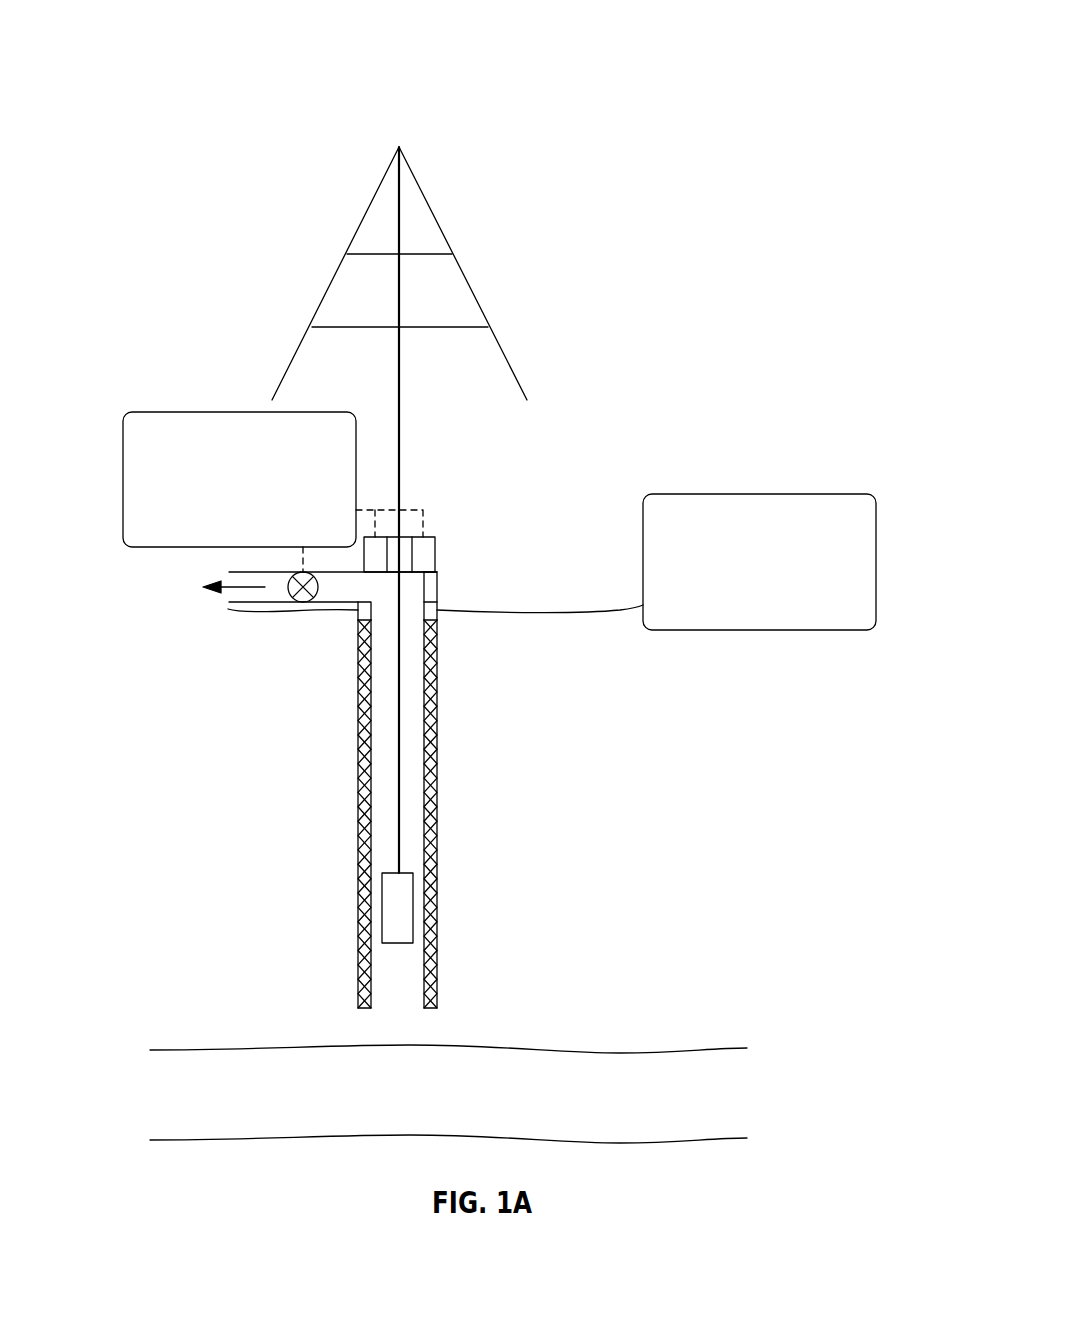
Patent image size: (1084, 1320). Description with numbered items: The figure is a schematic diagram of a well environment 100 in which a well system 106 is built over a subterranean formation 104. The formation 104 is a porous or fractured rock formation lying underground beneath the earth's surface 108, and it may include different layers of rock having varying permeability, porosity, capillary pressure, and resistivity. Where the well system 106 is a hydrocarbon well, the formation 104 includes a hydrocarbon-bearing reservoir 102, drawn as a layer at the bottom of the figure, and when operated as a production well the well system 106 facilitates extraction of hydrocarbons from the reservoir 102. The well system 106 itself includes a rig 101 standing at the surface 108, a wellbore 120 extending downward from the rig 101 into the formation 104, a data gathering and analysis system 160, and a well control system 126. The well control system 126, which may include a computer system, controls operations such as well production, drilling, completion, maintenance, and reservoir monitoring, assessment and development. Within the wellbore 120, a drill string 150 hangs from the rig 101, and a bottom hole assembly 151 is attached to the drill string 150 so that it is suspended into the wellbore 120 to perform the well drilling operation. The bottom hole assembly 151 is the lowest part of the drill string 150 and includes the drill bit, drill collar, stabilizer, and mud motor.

The well environment 100 is at (729, 115).
The well system 106 is at (205, 215).
The rig 101 is at (449, 211).
The well control system 126 is at (262, 522).
The data gathering and analysis system 160 is at (780, 622).
The surface 108 is at (530, 622).
The wellbore 120 is at (443, 751).
The drill string 150 is at (394, 750).
The bottom hole assembly 151 is at (388, 901).
The subterranean formation 104 is at (577, 893).
The reservoir 102 is at (428, 1123).